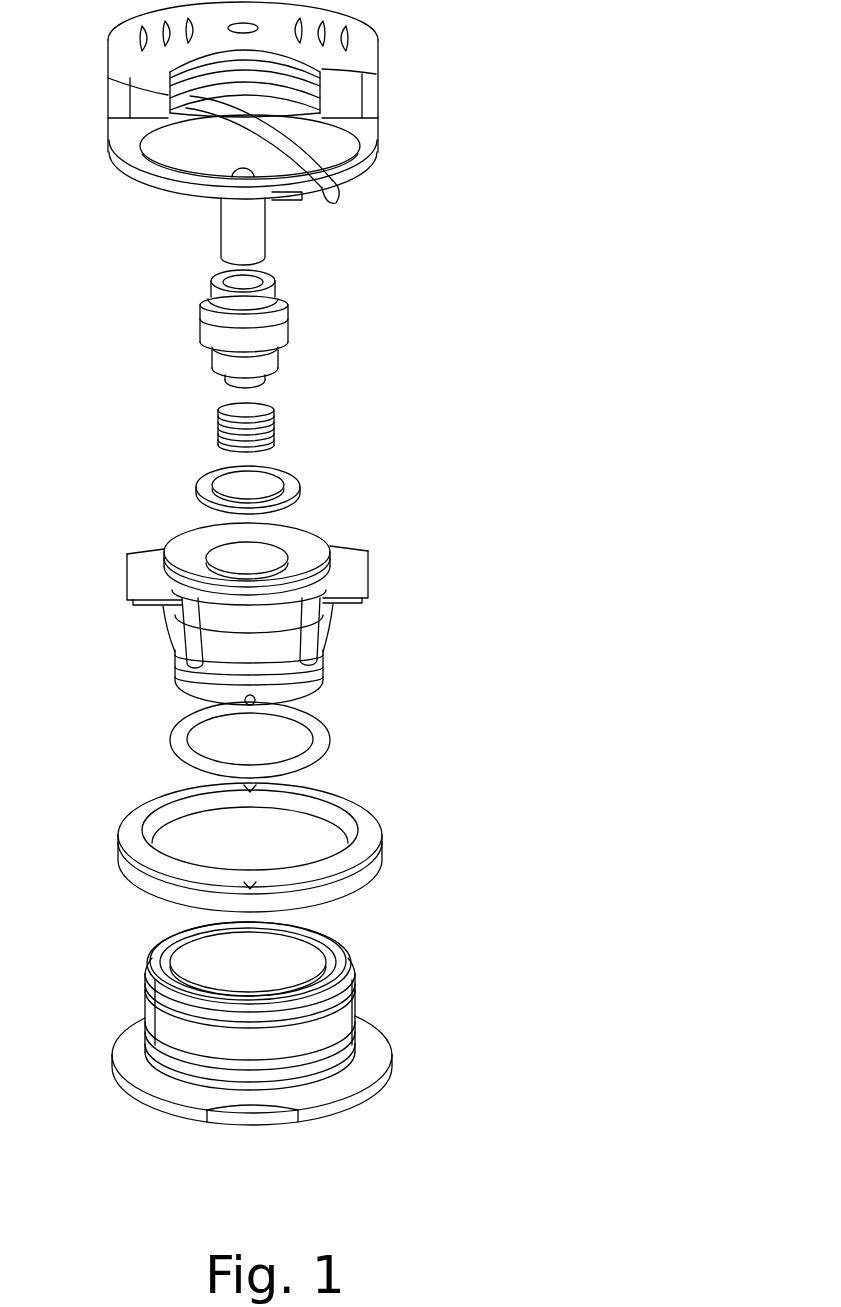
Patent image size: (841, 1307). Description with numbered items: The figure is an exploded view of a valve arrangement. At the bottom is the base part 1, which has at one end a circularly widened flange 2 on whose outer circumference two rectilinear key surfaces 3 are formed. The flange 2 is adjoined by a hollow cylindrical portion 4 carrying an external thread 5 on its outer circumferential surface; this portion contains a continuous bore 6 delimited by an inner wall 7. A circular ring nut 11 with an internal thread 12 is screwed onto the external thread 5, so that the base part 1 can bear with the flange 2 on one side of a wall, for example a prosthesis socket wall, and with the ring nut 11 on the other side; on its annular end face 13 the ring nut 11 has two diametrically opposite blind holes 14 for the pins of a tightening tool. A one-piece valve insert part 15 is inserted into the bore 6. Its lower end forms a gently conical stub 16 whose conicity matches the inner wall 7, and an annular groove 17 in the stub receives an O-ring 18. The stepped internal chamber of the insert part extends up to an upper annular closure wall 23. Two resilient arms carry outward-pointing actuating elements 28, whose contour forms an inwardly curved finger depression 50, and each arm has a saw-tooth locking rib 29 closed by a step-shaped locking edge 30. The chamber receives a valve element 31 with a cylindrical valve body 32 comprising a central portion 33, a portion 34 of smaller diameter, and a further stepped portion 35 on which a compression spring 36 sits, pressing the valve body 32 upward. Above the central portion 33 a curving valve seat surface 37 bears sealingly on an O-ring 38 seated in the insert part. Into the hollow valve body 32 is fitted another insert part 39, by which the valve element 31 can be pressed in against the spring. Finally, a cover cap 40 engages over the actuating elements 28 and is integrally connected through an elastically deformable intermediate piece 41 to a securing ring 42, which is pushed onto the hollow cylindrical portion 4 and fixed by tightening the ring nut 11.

The base part 1 is at (435, 1020).
The circularly widened flange 2 is at (372, 1072).
The rectilinear key surfaces 3 is at (245, 1115).
The hollow cylindrical portion 4 is at (140, 998).
The external thread 5 is at (140, 1012).
The continuous bore 6 is at (222, 974).
The inner wall 7 is at (316, 958).
The ring nut 11 is at (383, 837).
The internal thread 12 is at (320, 812).
The annular end face 13 is at (135, 830).
The blind holes 14 is at (283, 888).
The valve insert part 15 is at (418, 615).
The stub 16 is at (165, 693).
The annular groove 17 is at (325, 665).
The O-ring 18 is at (178, 736).
The upper annular closure wall 23 is at (298, 548).
The actuating elements 28 is at (148, 563).
The locking rib 29 is at (175, 640).
The step-shaped locking edge 30 is at (168, 606).
The valve element 31 is at (425, 258).
The cylindrical valve body 32 is at (193, 322).
The central portion 33 is at (265, 326).
The portion with smaller diameter 34 is at (265, 360).
The portion for receiving the compression spring 35 is at (222, 378).
The compression spring 36 is at (216, 436).
The valve seat surface 37 is at (278, 306).
The O-ring 38 is at (268, 468).
The insert part 39 is at (233, 232).
The cover cap 40 is at (376, 40).
The intermediate piece 41 is at (362, 134).
The securing ring 42 is at (338, 184).
The finger depression 50 is at (368, 578).